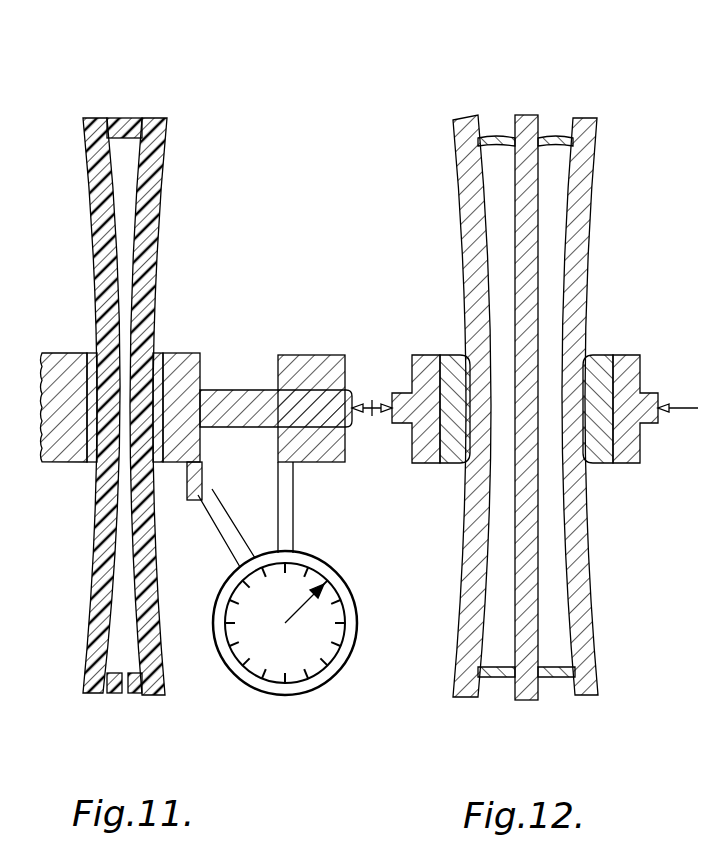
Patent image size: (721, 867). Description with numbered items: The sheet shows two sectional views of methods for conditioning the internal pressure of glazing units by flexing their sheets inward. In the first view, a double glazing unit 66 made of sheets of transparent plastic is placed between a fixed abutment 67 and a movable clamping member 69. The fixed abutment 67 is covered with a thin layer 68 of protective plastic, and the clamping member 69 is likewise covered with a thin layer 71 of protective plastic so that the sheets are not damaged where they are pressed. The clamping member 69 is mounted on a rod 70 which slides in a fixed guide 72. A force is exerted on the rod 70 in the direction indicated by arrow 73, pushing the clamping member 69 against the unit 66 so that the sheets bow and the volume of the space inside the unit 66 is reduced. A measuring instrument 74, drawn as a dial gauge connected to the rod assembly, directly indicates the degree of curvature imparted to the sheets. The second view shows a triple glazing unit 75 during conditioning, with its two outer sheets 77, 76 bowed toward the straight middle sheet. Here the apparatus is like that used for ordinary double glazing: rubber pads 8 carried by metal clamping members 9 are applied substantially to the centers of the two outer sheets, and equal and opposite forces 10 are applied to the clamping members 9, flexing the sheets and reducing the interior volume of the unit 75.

In FIG. 11, the double glazing unit 66 is at (172, 126).
In FIG. 11, the fixed abutment 67 is at (63, 365).
In FIG. 11, the thin layer of protective plastic 68 is at (92, 445).
In FIG. 11, the movable clamping member 69 is at (177, 380).
In FIG. 11, the rod 70 is at (225, 395).
In FIG. 11, the thin layer of protective plastic 71 is at (158, 352).
In FIG. 11, the fixed guide 72 is at (291, 354).
In FIG. 11, the arrow 73 is at (364, 400).
In FIG. 11, the measuring instrument 74 is at (297, 562).
In FIG. 12, the triple glazing unit 75 is at (521, 112).
In FIG. 12, the right blade 76 is at (600, 128).
In FIG. 12, the left blade 77 is at (466, 118).
In FIG. 12, the rubber pads 8 is at (453, 368).
In FIG. 12, the metal clamping members 9 is at (425, 445).
In FIG. 11, the equal and opposite forces 10 is at (375, 400).
In FIG. 12, the equal and opposite forces 10 is at (678, 408).